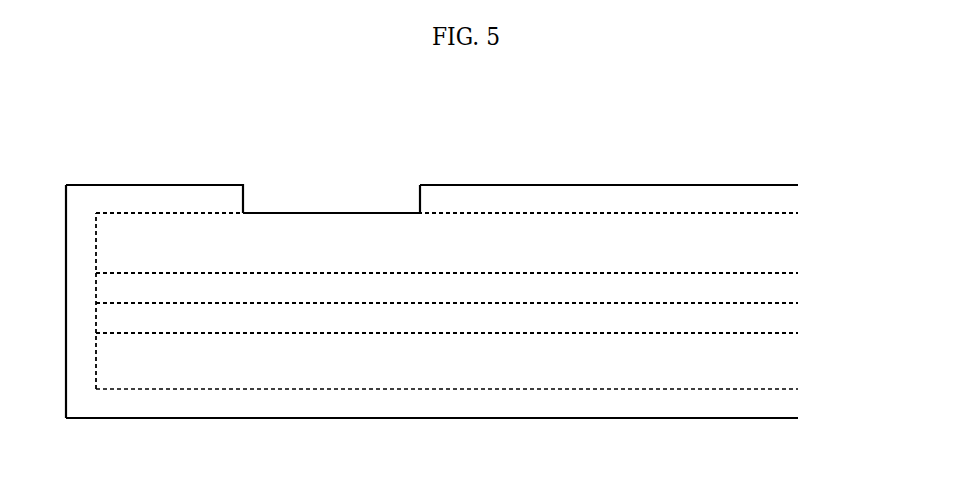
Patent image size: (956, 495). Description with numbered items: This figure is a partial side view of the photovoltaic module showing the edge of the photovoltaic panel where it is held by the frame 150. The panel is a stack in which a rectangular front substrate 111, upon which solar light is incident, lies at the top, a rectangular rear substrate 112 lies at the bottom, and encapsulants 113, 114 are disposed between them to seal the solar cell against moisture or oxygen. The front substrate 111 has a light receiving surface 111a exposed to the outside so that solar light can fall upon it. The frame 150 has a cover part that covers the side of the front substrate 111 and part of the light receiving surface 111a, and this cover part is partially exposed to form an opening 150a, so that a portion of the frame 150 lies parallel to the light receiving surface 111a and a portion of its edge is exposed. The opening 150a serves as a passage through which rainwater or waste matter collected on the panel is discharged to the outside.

The frame 150 is at (139, 204).
The opening 150a is at (309, 191).
The light receiving surface 111a is at (365, 213).
The front substrate 111 is at (562, 243).
The encapsulant 113 is at (375, 292).
The encapsulant 114 is at (435, 320).
The rear substrate 112 is at (619, 362).